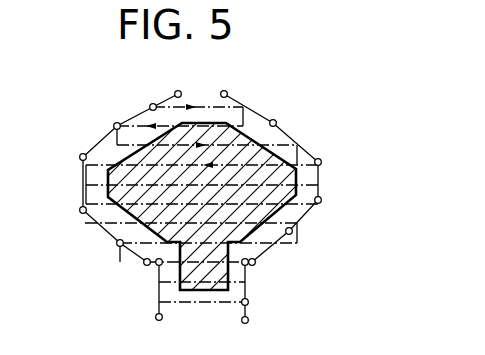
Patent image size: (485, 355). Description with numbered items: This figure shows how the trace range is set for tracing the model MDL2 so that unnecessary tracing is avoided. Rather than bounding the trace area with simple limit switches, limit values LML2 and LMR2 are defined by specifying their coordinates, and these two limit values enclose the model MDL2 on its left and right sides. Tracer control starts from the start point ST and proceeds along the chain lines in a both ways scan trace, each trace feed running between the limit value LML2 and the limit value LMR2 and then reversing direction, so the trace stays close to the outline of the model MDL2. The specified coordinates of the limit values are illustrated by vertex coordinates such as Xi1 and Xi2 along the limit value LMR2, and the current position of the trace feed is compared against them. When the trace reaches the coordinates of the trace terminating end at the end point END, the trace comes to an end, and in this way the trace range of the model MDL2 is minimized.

The left limit value LML2 is at (100, 143).
The right limit value LMR2 is at (291, 207).
The model MDL2 is at (257, 230).
The start point ST is at (148, 89).
The end point END is at (277, 302).
The vertex coordinates (xi+1, yi+1) Xi1 is at (322, 159).
The vertex coordinates (xi+2, yi+2) Xi2 is at (322, 203).